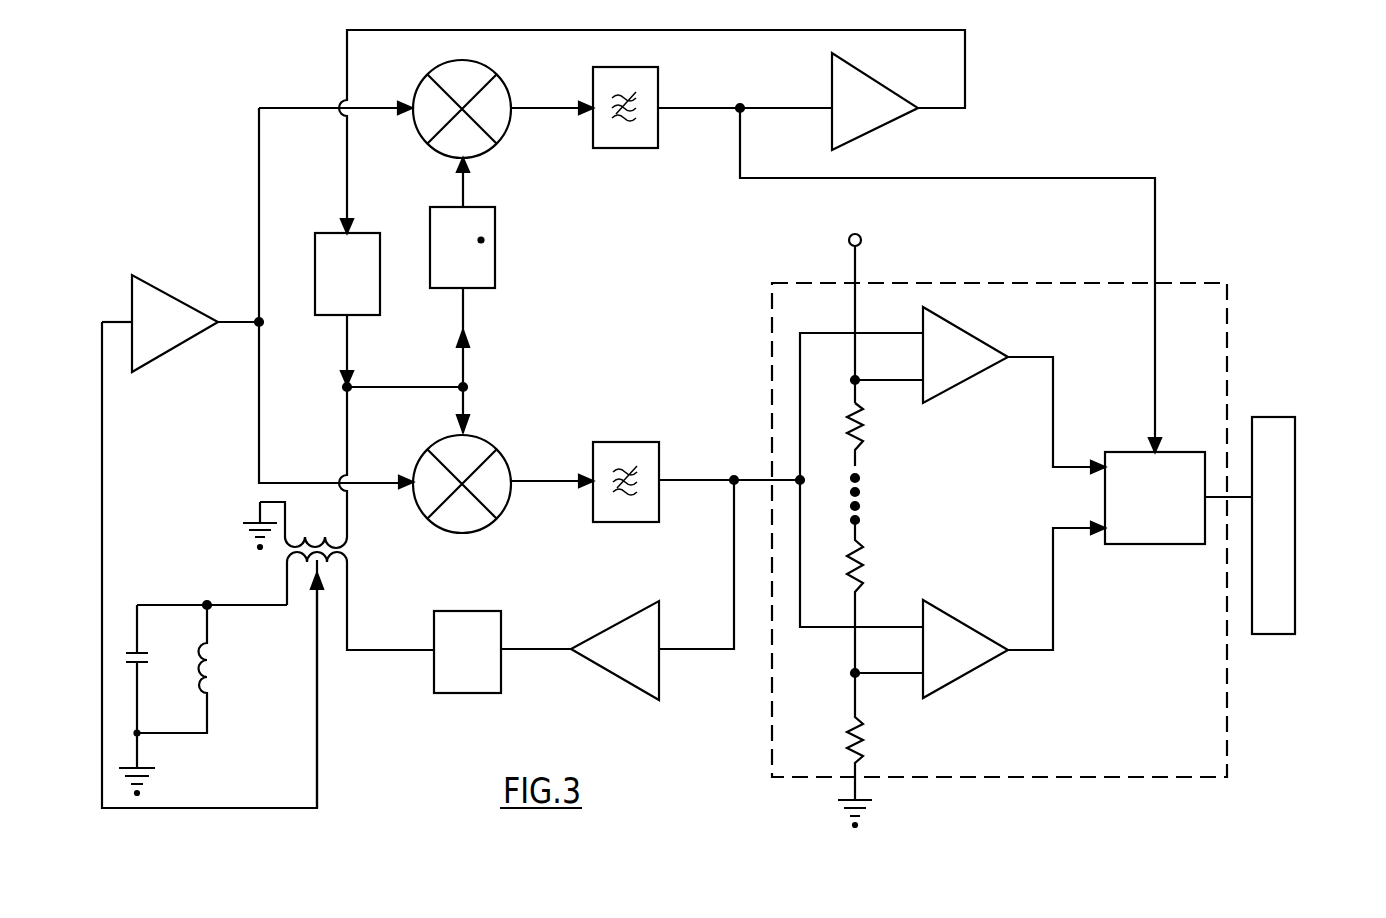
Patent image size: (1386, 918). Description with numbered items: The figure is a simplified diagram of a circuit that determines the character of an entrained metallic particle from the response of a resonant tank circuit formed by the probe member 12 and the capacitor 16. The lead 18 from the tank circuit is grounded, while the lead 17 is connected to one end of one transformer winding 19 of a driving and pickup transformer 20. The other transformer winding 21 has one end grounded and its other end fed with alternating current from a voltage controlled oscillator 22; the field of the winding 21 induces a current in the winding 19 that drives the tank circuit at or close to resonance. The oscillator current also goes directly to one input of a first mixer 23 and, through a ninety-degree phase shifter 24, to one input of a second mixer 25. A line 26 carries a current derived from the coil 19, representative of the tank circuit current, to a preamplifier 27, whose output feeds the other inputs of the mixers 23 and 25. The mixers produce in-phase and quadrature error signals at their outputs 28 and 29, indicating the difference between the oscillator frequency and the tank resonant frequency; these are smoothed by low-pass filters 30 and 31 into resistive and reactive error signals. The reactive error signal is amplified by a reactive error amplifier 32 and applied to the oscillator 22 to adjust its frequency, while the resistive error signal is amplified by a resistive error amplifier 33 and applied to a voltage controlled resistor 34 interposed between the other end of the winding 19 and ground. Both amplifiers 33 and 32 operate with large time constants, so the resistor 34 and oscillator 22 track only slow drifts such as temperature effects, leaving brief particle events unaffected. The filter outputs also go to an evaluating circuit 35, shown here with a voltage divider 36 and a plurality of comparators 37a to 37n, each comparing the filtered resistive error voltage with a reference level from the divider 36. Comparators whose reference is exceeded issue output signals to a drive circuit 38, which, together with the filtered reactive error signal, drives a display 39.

The probe member 12 is at (202, 677).
The capacitor 16 is at (146, 653).
The lead 17 is at (243, 606).
The lead 18 is at (138, 752).
The one transformer winding 19 is at (347, 563).
The driving and pickup transformer 20 is at (265, 549).
The other transformer winding 21 is at (302, 528).
The voltage controlled oscillator 22 is at (380, 300).
The first mixer 23 is at (488, 440).
The 90° phase shifter 24 is at (495, 252).
The second mixer 25 is at (492, 70).
The line 26 is at (317, 727).
The preamplifier 27 is at (150, 283).
The output 28 is at (518, 483).
The output 29 is at (528, 112).
The low-pass filter 30 is at (614, 442).
The low-pass filter 31 is at (617, 150).
The reactive error amplifier 32 is at (877, 125).
The resistive error amplifier 33 is at (614, 626).
The voltage controlled resistor 34 is at (457, 611).
The evaluating circuit 35 is at (999, 516).
The voltage divider 36 is at (858, 430).
The comparator 37a is at (963, 331).
The comparator 37n is at (968, 678).
The drive circuit 38 is at (1130, 544).
The display 39 is at (1295, 474).